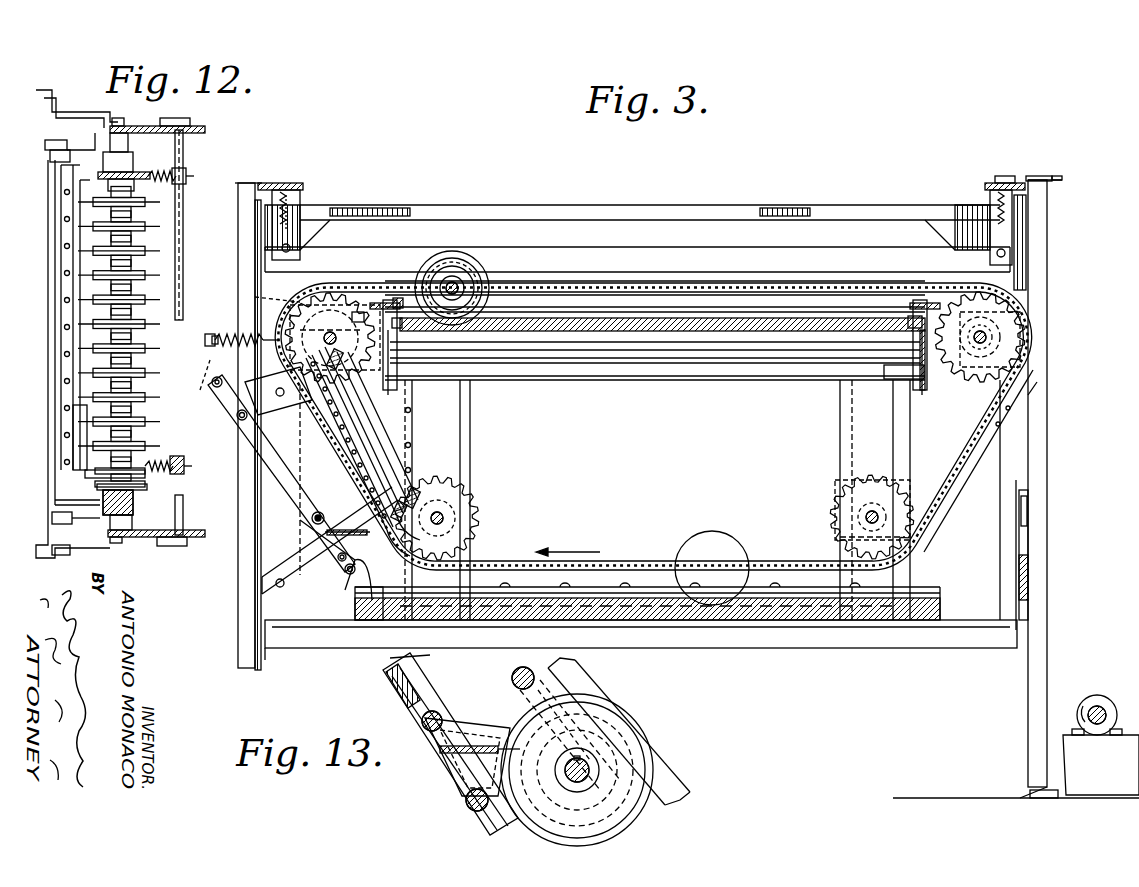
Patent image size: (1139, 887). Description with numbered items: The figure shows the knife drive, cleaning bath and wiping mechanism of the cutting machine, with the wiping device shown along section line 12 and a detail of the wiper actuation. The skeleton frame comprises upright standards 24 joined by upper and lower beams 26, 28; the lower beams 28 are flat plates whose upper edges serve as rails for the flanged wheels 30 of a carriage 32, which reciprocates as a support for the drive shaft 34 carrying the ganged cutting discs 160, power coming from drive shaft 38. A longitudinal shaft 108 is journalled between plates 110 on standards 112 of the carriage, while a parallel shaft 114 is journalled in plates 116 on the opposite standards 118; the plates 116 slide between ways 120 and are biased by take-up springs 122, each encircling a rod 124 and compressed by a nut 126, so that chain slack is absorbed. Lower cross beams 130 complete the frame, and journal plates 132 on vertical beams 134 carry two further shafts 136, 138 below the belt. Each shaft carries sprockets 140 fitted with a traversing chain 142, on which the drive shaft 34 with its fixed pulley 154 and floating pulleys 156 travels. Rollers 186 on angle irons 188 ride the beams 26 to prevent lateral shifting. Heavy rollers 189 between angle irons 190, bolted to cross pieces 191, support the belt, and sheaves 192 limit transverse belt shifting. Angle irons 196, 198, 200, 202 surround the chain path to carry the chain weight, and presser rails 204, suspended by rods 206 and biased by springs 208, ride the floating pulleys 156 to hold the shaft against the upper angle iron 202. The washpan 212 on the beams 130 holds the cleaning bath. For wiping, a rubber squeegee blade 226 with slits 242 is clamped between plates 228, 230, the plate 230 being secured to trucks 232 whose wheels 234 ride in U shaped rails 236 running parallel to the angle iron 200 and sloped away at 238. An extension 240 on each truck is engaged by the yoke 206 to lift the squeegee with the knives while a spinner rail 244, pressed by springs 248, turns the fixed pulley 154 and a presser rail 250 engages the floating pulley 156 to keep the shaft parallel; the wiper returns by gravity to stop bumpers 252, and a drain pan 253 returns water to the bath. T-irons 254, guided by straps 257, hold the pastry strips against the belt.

In FIG. 3, the frame member 12 is at (445, 478).
In FIG. 3, the upright standard 24 is at (1030, 684).
In FIG. 3, the upper beam 26 is at (1032, 176).
In FIG. 3, the lower beam 28 is at (1028, 572).
In FIG. 3, the flanged wheel 30 is at (1028, 505).
In FIG. 3, the carriage 32 is at (832, 675).
In FIG. 3, the drive shaft 34 is at (453, 282).
In FIG. 13, the drive shaft 34 is at (590, 772).
In FIG. 3, the drive shaft 38 is at (1100, 712).
In FIG. 3, the longitudinally extending shaft 108 is at (995, 338).
In FIG. 3, the plate 110 is at (1012, 295).
In FIG. 3, the standard 112 is at (1028, 432).
In FIG. 3, the parallel shaft 114 is at (333, 330).
In FIG. 3, the journal plate 116 is at (318, 290).
In FIG. 3, the carriage standard 118 is at (275, 290).
In FIG. 3, the way 120 is at (290, 296).
In FIG. 3, the take-up spring 122 is at (240, 335).
In FIG. 3, the rod 124 is at (218, 342).
In FIG. 3, the nut 126 is at (255, 367).
In FIG. 3, the lower cross beam 130 is at (790, 635).
In FIG. 3, the journal plate 132 is at (830, 490).
In FIG. 3, the vertical beam 134 is at (835, 432).
In FIG. 3, the shaft 136 is at (447, 516).
In FIG. 3, the shaft 138 is at (865, 518).
In FIG. 3, the sprocket 140 is at (970, 372).
In FIG. 3, the traversing chain 142 is at (666, 287).
In FIG. 12, the V-flanged pulley 154 is at (145, 470).
In FIG. 12, the V-pulley 156 is at (135, 176).
In FIG. 3, the cutting disc 160 is at (480, 278).
In FIG. 13, the cutting disc 160 is at (652, 752).
In FIG. 3, the roller 186 is at (990, 185).
In FIG. 3, the angle iron 188 is at (1018, 218).
In FIG. 3, the heavy roller 189 is at (738, 360).
In FIG. 3, the angle iron 190 is at (430, 380).
In FIG. 3, the cross piece 191 is at (650, 380).
In FIG. 3, the sheave 192 is at (396, 300).
In FIG. 3, the angle iron 196 is at (955, 480).
In FIG. 3, the angle iron 198 is at (627, 565).
In FIG. 3, the angle iron 200 is at (330, 430).
In FIG. 12, the angle iron 200 is at (120, 118).
In FIG. 3, the angle iron 202 is at (745, 290).
In FIG. 3, the presser rail 204 is at (818, 240).
In FIG. 3, the rod 206 is at (283, 182).
In FIG. 13, the rod 206 is at (620, 713).
In FIG. 3, the spring 208 is at (545, 280).
In FIG. 13, the spring 208 is at (545, 676).
In FIG. 3, the washpan 212 is at (678, 620).
In FIG. 3, the rubber squeegee blade 226 is at (345, 535).
In FIG. 12, the rubber squeegee blade 226 is at (80, 475).
In FIG. 13, the rubber squeegee blade 226 is at (472, 748).
In FIG. 13, the metal plate 228 is at (450, 750).
In FIG. 13, the metal plate 230 is at (467, 800).
In FIG. 3, the truck 232 is at (236, 408).
In FIG. 12, the truck 232 is at (90, 150).
In FIG. 13, the truck 232 is at (465, 715).
In FIG. 12, the wheel 234 is at (68, 153).
In FIG. 13, the wheel 234 is at (424, 718).
In FIG. 12, the U shaped rail 236 is at (60, 528).
In FIG. 13, the U shaped rail 236 is at (400, 672).
In FIG. 3, the sloped portion 238 is at (285, 432).
In FIG. 13, the extension 240 is at (522, 672).
In FIG. 12, the slit 242 is at (82, 430).
In FIG. 3, the spinner rail 244 is at (380, 445).
In FIG. 12, the spinner rail 244 is at (150, 495).
In FIG. 12, the spring 248 is at (170, 470).
In FIG. 12, the presser rail 250 is at (165, 176).
In FIG. 3, the stop bumper 252 is at (355, 578).
In FIG. 3, the drain pan 253 is at (295, 470).
In FIG. 3, the T-iron 254 is at (865, 318).
In FIG. 3, the strap 257 is at (892, 378).